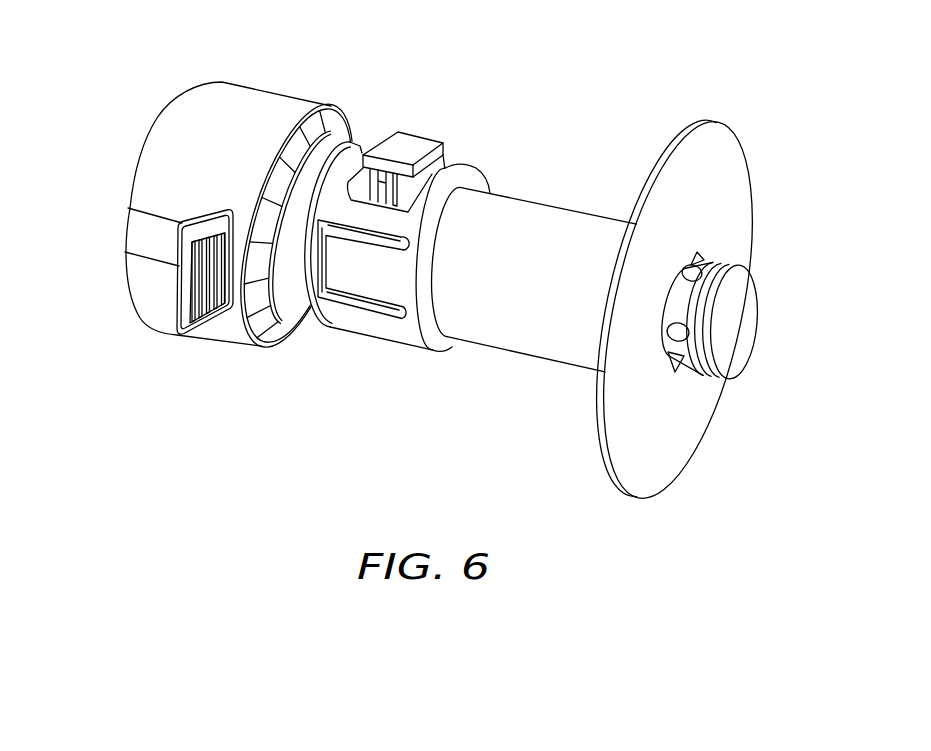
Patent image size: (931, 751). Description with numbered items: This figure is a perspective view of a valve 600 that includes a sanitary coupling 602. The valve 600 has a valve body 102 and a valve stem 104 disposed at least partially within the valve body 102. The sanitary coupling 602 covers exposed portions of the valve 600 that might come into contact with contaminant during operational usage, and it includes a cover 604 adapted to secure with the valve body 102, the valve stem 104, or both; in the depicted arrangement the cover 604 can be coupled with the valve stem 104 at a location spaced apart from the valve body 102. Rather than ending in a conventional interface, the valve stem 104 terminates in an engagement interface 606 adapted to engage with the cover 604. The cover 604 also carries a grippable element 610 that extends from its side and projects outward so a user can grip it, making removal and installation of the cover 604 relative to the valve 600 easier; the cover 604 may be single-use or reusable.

The valve 600 is at (568, 66).
The sanitary coupling 602 is at (292, 90).
The cover 604 is at (160, 150).
The engagement interface 606 is at (292, 308).
The grippable element 610 is at (193, 326).
The valve body 102 is at (535, 217).
The valve stem 104 is at (757, 328).